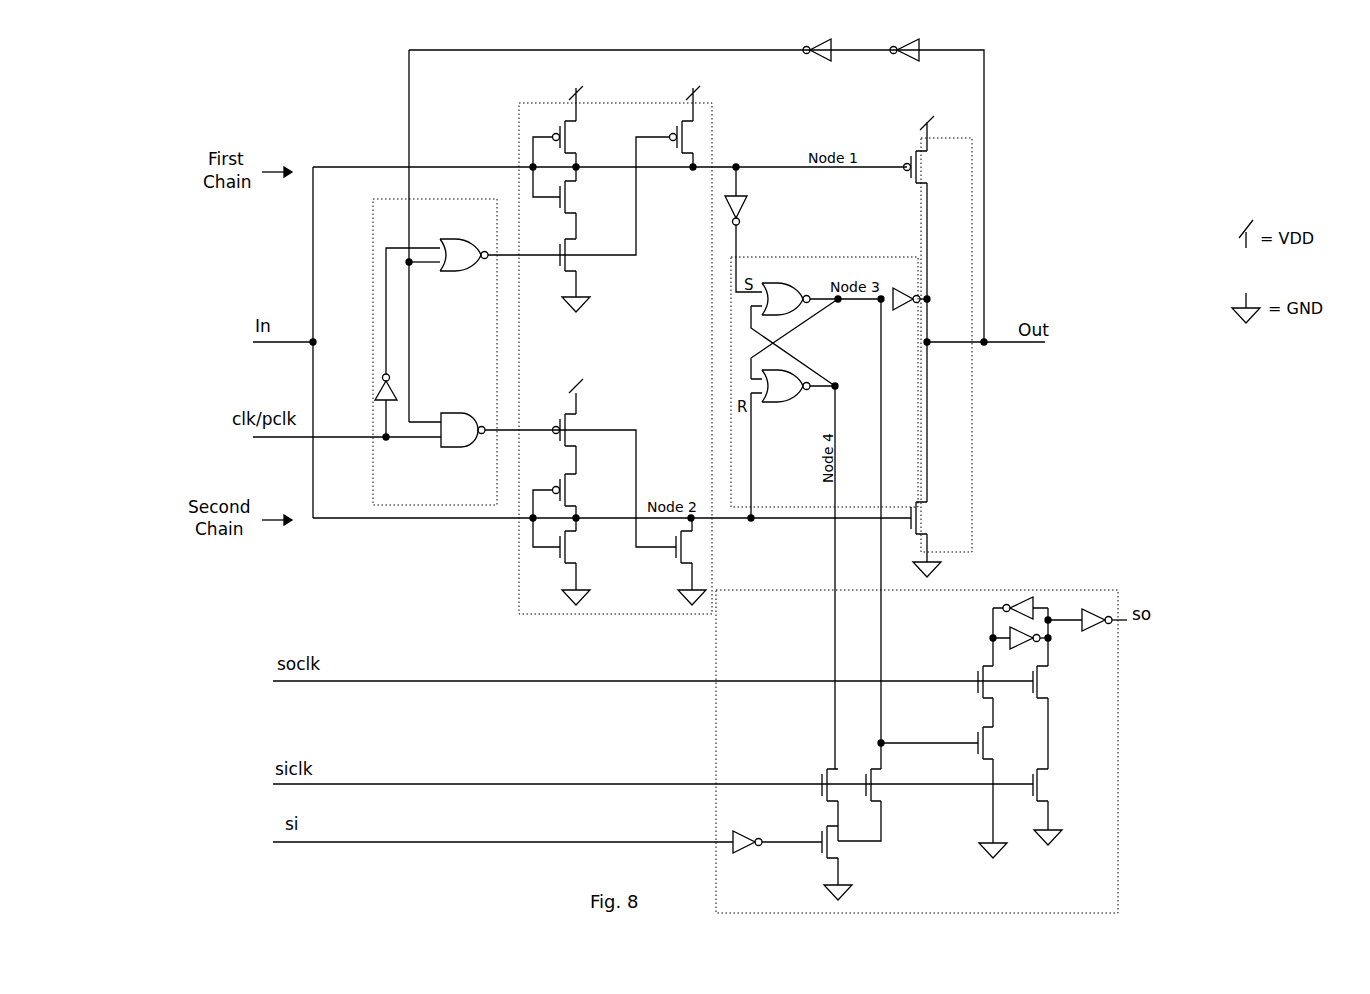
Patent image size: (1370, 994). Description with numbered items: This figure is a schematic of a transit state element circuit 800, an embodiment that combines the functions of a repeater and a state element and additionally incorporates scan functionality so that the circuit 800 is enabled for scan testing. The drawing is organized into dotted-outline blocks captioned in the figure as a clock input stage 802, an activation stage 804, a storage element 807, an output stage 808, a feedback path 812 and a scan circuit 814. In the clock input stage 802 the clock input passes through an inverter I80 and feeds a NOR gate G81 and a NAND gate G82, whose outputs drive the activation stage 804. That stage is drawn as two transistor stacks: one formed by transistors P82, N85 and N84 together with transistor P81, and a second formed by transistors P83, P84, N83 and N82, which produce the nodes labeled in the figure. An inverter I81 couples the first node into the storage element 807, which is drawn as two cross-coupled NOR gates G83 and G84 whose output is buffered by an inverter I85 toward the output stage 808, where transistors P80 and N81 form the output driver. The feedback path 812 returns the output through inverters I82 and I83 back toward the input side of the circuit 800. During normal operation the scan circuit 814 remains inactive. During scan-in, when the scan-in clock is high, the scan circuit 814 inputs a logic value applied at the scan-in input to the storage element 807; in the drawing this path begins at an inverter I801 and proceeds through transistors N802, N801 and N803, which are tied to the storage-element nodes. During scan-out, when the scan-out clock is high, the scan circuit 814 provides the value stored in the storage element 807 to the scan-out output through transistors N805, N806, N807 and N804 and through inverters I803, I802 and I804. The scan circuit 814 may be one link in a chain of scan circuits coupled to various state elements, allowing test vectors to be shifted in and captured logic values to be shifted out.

The transit state element circuit 800 is at (649, 446).
The clock input stage 802 is at (441, 505).
The activation stage 804 is at (520, 614).
The storage element 807 is at (820, 507).
The output stage 808 is at (973, 439).
The feedback path 812 is at (993, 115).
The scan circuit 814 is at (1118, 697).
The inverter I80 is at (393, 342).
The NOR gate G81 is at (539, 216).
The NAND gate G82 is at (542, 480).
The PMOS transistor P82 is at (574, 141).
The NMOS transistor N85 is at (588, 203).
The NMOS transistor N84 is at (589, 272).
The PMOS transistor P81 is at (698, 126).
The PMOS transistor P83 is at (584, 426).
The PMOS transistor P84 is at (575, 510).
The NMOS transistor N83 is at (588, 561).
The NMOS transistor N82 is at (699, 561).
The inverter I81 is at (752, 229).
The NOR gate G83 is at (817, 324).
The NOR gate G84 is at (794, 408).
The inverter I85 is at (905, 308).
The PMOS transistor P80 is at (934, 309).
The NMOS transistor N81 is at (939, 539).
The inverter I83 is at (810, 65).
The inverter I82 is at (899, 65).
The inverter I801 is at (777, 856).
The NMOS transistor N801 is at (804, 794).
The NMOS transistor N802 is at (859, 863).
The NMOS transistor N803 is at (890, 805).
The NMOS transistor N805 is at (944, 787).
The NMOS transistor N806 is at (964, 667).
The NMOS transistor N807 is at (1064, 688).
The NMOS transistor N804 is at (1062, 807).
The inverter I803 is at (1015, 606).
The inverter I802 is at (1020, 649).
The inverter I804 is at (1087, 630).